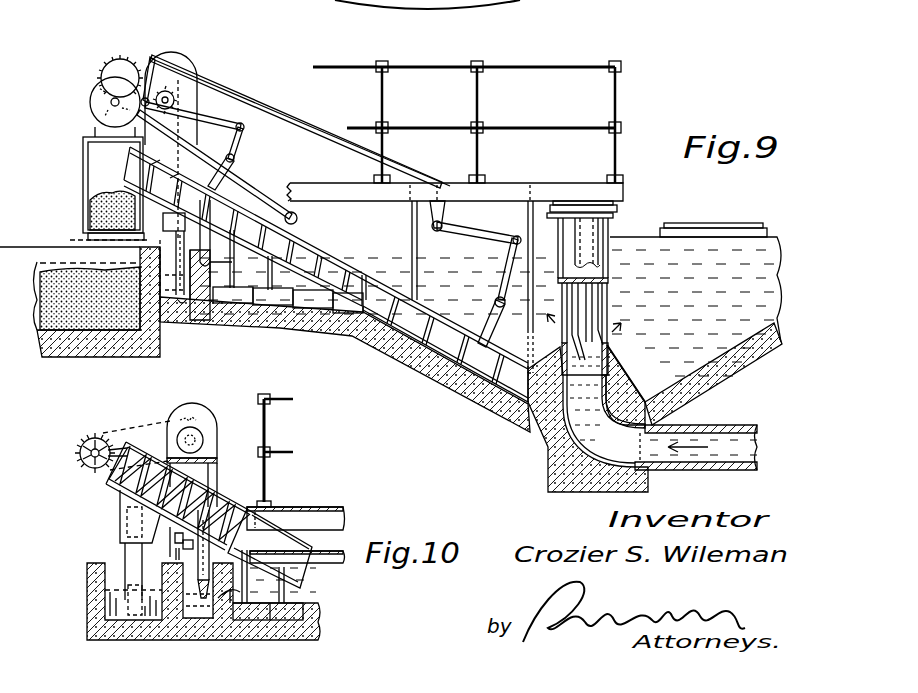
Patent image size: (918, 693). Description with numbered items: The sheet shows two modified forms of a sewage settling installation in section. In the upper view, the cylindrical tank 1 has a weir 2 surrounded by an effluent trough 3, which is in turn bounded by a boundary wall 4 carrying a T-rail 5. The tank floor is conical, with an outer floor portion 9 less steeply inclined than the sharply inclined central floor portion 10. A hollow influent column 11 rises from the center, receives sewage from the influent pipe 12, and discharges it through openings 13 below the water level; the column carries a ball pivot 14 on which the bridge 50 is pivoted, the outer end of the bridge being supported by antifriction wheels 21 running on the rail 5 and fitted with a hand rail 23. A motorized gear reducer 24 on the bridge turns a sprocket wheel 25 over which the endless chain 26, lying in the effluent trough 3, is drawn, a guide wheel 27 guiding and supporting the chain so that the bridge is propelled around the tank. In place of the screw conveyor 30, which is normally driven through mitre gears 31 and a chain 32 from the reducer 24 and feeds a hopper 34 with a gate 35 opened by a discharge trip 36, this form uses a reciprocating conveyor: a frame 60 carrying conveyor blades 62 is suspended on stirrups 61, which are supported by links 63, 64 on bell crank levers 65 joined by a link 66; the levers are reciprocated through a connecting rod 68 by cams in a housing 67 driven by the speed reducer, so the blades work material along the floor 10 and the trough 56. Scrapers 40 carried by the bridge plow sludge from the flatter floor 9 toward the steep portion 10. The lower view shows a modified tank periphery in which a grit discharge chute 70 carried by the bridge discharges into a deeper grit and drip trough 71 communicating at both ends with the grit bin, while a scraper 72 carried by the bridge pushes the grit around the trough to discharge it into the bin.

In FIG. 9, the cylindrical tank 1 is at (754, 354).
In FIG. 10, the cylindrical tank 1 is at (85, 557).
In FIG. 10, the weir 2 is at (232, 590).
In FIG. 9, the effluent trough 3 is at (172, 302).
In FIG. 10, the effluent trough 3 is at (192, 620).
In FIG. 9, the boundary wall 4 is at (150, 320).
In FIG. 10, the boundary wall 4 is at (170, 580).
In FIG. 9, the T-rail 5 is at (165, 222).
In FIG. 10, the T-rail 5 is at (190, 549).
In FIG. 9, the outer floor portion 9 is at (258, 300).
In FIG. 10, the outer floor portion 9 is at (322, 606).
In FIG. 9, the central floor portion 10 is at (718, 365).
In FIG. 9, the influent column 11 is at (608, 352).
In FIG. 9, the influent pipe 12 is at (700, 470).
In FIG. 9, the openings 13 is at (595, 312).
In FIG. 9, the ball pivot 14 is at (615, 218).
In FIG. 9, the antifriction wheels 21 is at (120, 258).
In FIG. 10, the antifriction wheels 21 is at (170, 545).
In FIG. 9, the hand rail 23 is at (513, 122).
In FIG. 10, the hand rail 23 is at (269, 470).
In FIG. 9, the motorized gear reducer 24 is at (178, 80).
In FIG. 10, the motorized gear reducer 24 is at (208, 412).
In FIG. 9, the sprocket wheel 25 is at (205, 84).
In FIG. 9, the endless chain 26 is at (170, 160).
In FIG. 10, the endless chain 26 is at (207, 603).
In FIG. 9, the guide wheel 27 is at (190, 262).
In FIG. 10, the guide wheel 27 is at (211, 590).
In FIG. 10, the combined grit washer and screw conveyor 30 is at (228, 522).
In FIG. 10, the mitre gears 31 is at (86, 463).
In FIG. 10, the chain 32 is at (125, 430).
In FIG. 9, the hopper 34 is at (85, 180).
In FIG. 9, the gate 35 is at (85, 215).
In FIG. 9, the discharge trip 36 is at (86, 236).
In FIG. 9, the scrapers 40 is at (228, 305).
In FIG. 10, the scrapers 40 is at (260, 622).
In FIG. 9, the bridge 50 is at (518, 178).
In FIG. 10, the bridge 50 is at (305, 506).
In FIG. 9, the trough 56 is at (300, 305).
In FIG. 9, the frame 60 is at (345, 265).
In FIG. 9, the stirrups 61 is at (240, 170).
In FIG. 9, the conveyor blades 62 is at (465, 345).
In FIG. 9, the link 63 is at (500, 252).
In FIG. 9, the link 64 is at (245, 146).
In FIG. 9, the bell crank levers 65 is at (212, 110).
In FIG. 9, the link 66 is at (300, 118).
In FIG. 9, the housing 67 is at (90, 102).
In FIG. 9, the connecting rod 68 is at (205, 160).
In FIG. 10, the grit discharge chute 70 is at (119, 518).
In FIG. 10, the grit and drip trough 71 is at (103, 603).
In FIG. 10, the scraper 72 is at (137, 618).